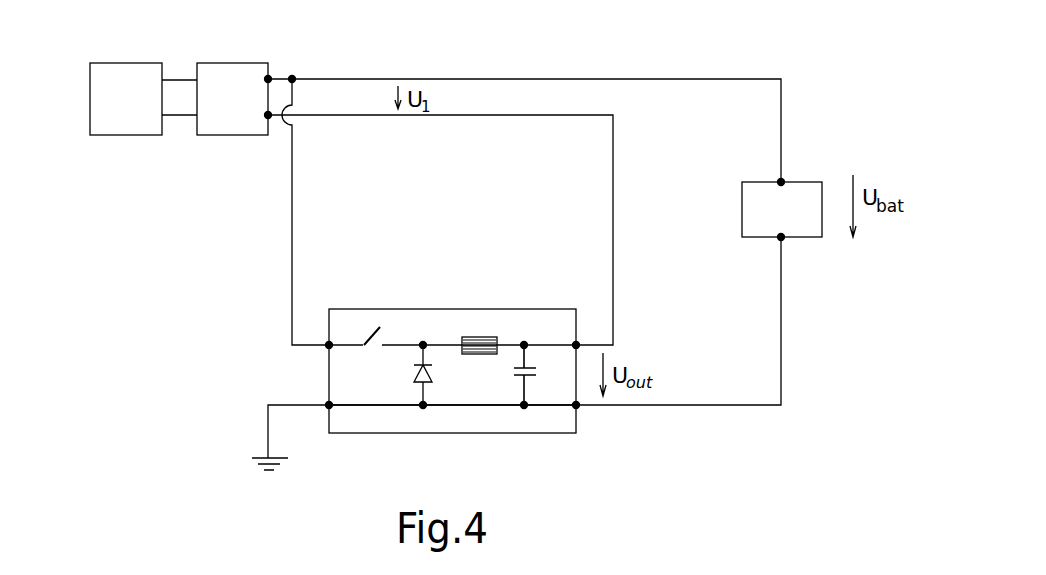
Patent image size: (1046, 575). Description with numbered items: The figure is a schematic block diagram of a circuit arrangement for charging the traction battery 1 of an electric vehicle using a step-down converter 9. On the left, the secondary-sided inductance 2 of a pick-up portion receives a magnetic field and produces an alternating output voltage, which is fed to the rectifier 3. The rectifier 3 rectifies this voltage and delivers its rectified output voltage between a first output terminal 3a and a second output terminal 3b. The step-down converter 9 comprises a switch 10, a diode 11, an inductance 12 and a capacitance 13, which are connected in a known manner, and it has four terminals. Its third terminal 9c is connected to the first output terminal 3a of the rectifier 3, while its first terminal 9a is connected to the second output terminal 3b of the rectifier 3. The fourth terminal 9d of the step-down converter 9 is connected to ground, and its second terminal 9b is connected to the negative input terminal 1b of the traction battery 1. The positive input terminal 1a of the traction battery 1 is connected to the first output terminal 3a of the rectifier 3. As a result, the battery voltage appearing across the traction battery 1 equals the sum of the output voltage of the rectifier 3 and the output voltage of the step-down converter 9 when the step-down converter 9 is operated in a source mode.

The traction battery 1 is at (816, 180).
The positive input terminal 1a is at (782, 181).
The negative input terminal 1b is at (782, 238).
The secondary-sided inductance 2 is at (132, 63).
The rectifier 3 is at (228, 63).
The first output terminal 3a is at (270, 78).
The second output terminal 3b is at (269, 117).
The step-down converter 9 is at (542, 434).
The first terminal 9a is at (578, 346).
The second terminal 9b is at (577, 406).
The third terminal 9c is at (328, 343).
The fourth terminal 9d is at (327, 403).
The switch 10 is at (372, 328).
The diode 11 is at (417, 379).
The inductance 12 is at (481, 337).
The capacitance 13 is at (520, 378).